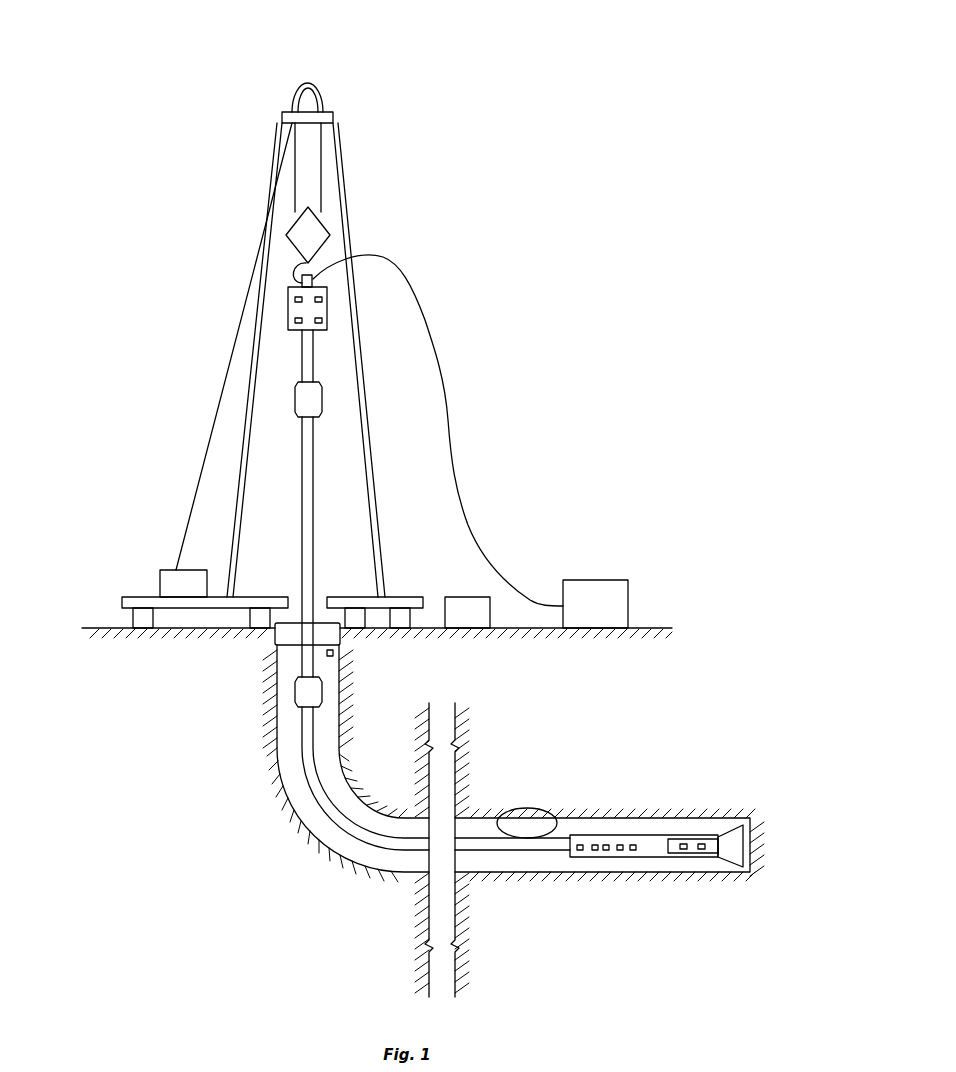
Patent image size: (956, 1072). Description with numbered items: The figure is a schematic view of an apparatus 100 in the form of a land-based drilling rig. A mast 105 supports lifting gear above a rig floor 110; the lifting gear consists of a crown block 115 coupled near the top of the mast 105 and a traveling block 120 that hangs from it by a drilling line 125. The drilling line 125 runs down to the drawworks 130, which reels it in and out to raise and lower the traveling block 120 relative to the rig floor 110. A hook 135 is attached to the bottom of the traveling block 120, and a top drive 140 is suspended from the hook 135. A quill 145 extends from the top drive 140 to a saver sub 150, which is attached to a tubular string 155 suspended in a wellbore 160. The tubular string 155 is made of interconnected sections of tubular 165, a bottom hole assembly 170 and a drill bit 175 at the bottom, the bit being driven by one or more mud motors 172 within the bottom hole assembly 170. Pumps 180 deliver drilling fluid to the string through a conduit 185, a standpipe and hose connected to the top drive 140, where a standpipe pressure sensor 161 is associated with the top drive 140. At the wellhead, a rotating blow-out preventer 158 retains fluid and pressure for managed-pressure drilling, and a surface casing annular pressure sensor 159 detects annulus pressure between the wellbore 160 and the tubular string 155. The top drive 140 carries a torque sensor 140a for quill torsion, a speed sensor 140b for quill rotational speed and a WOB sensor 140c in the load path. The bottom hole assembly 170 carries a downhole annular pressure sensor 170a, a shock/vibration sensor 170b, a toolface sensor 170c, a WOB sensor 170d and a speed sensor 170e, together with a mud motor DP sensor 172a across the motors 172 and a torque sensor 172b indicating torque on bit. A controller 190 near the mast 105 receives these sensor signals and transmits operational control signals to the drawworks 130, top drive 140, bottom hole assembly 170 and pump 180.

The apparatus 100 is at (232, 70).
The mast 105 is at (338, 150).
The rig floor 110 is at (122, 602).
The crown block 115 is at (320, 108).
The traveling block 120 is at (330, 237).
The drilling line 125 is at (295, 148).
The drawworks 130 is at (160, 578).
The hook 135 is at (288, 267).
The top drive 140 is at (292, 300).
The torque sensor 140a is at (295, 320).
The speed sensor 140b is at (322, 300).
The WOB sensor 140c is at (322, 320).
The quill 145 is at (302, 355).
The saver sub 150 is at (295, 400).
The tubular string 155 is at (289, 455).
The rotating blow-out preventer 158 is at (290, 637).
The surface casing annular pressure sensor 159 is at (335, 652).
The wellbore 160 is at (272, 748).
The standpipe pressure sensor 161 is at (300, 282).
The tubular 165 is at (302, 548).
The bottom hole assembly 170 is at (705, 862).
The downhole annular pressure sensor 170a is at (579, 853).
The shock/vibration sensor 170b is at (594, 843).
The toolface sensor 170c is at (606, 853).
The WOB sensor 170d is at (619, 843).
The speed sensor 170e is at (633, 853).
The motor 172 is at (695, 855).
The mud motor DP sensor 172a is at (683, 842).
The torque sensor 172b is at (702, 842).
The drill bit 175 is at (733, 820).
The pump 180 is at (597, 580).
The conduit 185 is at (472, 533).
The controller 190 is at (467, 597).